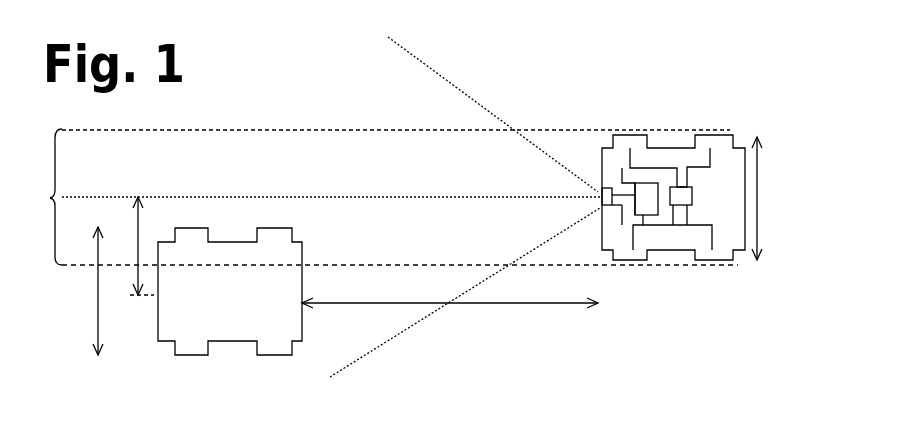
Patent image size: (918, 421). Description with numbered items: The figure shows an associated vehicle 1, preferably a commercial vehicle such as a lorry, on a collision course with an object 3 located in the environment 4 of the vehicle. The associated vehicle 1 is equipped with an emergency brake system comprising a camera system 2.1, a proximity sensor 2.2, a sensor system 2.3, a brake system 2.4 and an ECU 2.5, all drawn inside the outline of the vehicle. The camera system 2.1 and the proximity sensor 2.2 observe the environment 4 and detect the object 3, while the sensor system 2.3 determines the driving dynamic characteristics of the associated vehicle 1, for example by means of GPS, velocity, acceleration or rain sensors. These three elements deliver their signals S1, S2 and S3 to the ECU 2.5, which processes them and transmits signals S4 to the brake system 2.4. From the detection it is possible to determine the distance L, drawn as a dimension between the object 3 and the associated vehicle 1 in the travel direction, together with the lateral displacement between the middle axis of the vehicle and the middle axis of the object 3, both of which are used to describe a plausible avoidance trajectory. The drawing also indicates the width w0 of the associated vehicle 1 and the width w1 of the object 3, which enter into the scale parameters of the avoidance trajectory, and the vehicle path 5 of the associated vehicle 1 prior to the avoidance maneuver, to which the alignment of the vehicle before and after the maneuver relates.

The associated vehicle 1 is at (735, 240).
The camera system 2.1 is at (602, 198).
The proximity sensor 2.2 is at (603, 170).
The sensor system 2.3 is at (608, 218).
The brake system 2.4 is at (682, 225).
The ECU 2.5 is at (650, 228).
The object 3 is at (185, 357).
The environment 4 is at (430, 115).
The vehicle path 5 is at (381, 197).
The signal S1 is at (603, 222).
The signal S2 is at (626, 185).
The signal S3 is at (622, 222).
The signal S4 is at (675, 187).
The width of the associated vehicle w0 is at (778, 198).
The width of the object w1 is at (76, 291).
The distance L is at (450, 319).